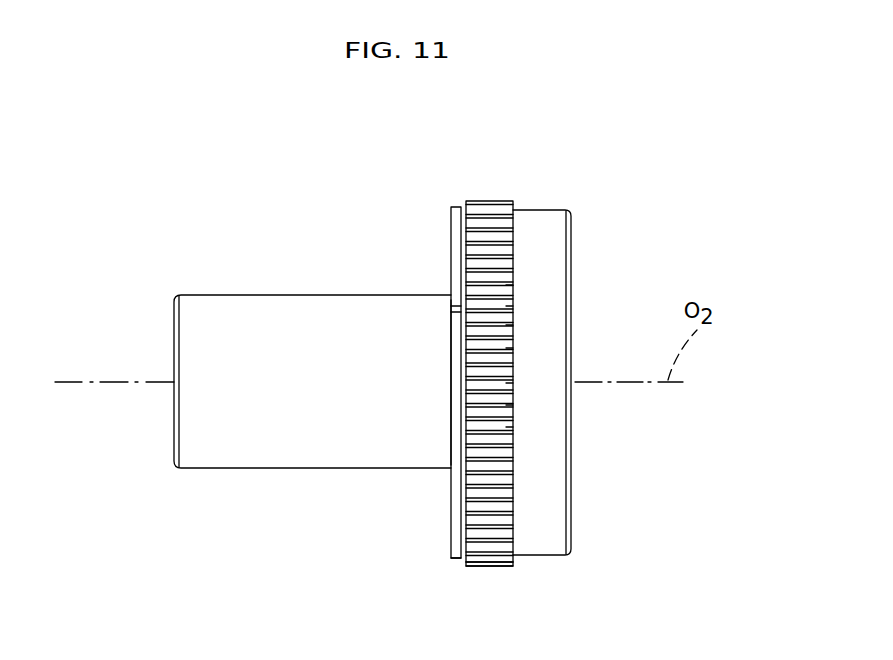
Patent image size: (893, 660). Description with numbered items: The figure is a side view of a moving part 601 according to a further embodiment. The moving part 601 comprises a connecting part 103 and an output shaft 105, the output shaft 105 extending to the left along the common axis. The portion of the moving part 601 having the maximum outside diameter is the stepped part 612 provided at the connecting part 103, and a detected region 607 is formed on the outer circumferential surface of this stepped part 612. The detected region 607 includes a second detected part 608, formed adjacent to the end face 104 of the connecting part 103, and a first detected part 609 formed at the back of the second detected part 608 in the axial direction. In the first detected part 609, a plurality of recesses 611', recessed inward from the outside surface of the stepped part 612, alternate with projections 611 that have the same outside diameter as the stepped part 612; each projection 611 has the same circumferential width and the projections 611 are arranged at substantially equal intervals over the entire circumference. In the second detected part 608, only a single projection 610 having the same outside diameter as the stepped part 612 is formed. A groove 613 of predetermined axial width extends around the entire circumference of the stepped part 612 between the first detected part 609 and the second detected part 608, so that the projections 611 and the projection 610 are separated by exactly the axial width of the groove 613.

The moving part 601 is at (672, 214).
The connecting part 103 is at (564, 206).
The end face 104 is at (452, 518).
The output shaft 105 is at (311, 289).
The detected region 607 is at (527, 123).
The second detected part 608 is at (456, 203).
The first detected part 609 is at (489, 198).
The projection 610 is at (458, 304).
The projections 611 is at (571, 316).
The recesses 611' is at (582, 414).
The stepped part 612 is at (500, 569).
The groove 613 is at (463, 558).